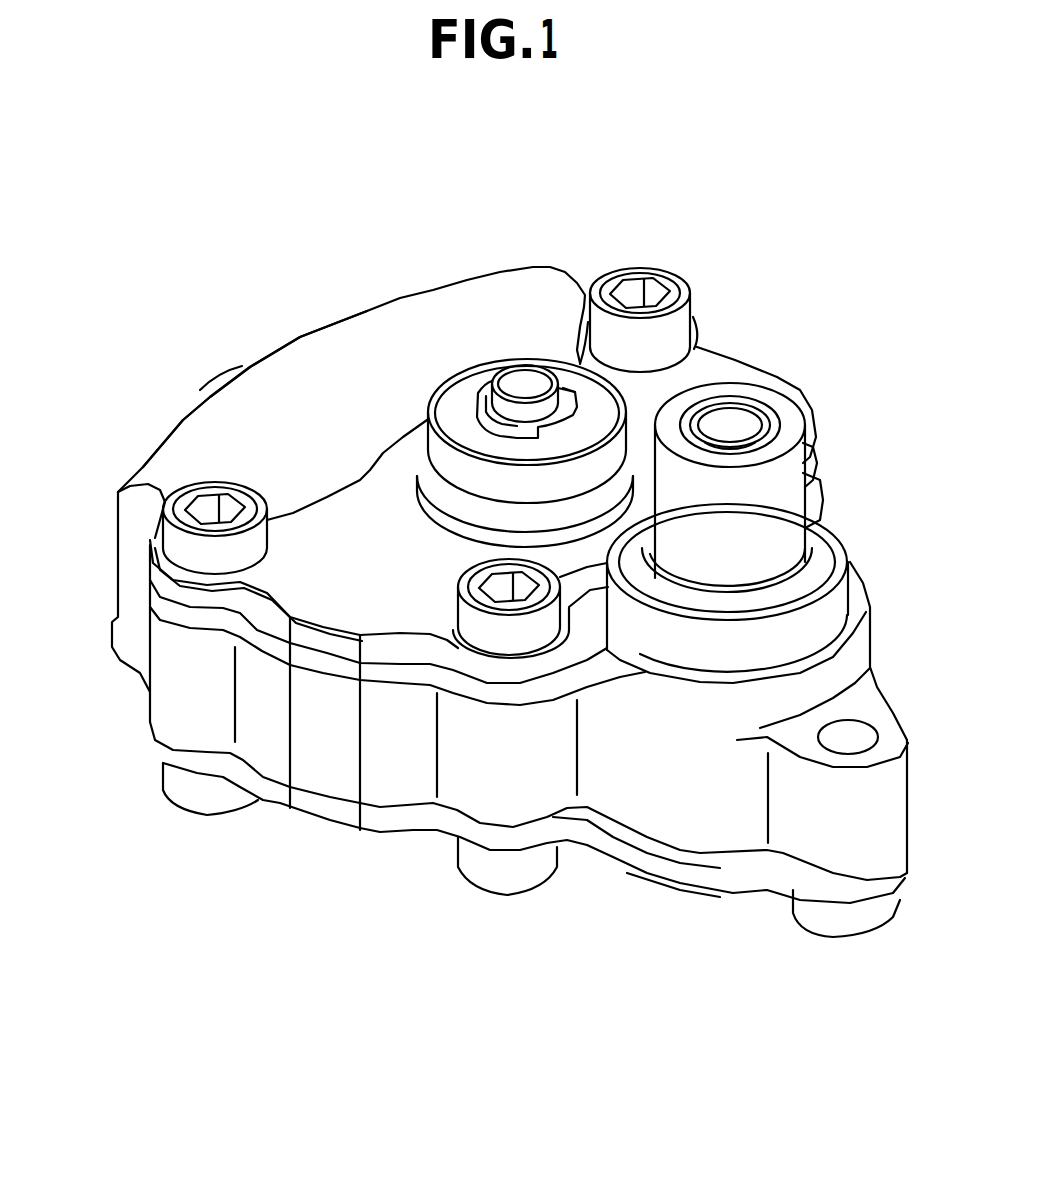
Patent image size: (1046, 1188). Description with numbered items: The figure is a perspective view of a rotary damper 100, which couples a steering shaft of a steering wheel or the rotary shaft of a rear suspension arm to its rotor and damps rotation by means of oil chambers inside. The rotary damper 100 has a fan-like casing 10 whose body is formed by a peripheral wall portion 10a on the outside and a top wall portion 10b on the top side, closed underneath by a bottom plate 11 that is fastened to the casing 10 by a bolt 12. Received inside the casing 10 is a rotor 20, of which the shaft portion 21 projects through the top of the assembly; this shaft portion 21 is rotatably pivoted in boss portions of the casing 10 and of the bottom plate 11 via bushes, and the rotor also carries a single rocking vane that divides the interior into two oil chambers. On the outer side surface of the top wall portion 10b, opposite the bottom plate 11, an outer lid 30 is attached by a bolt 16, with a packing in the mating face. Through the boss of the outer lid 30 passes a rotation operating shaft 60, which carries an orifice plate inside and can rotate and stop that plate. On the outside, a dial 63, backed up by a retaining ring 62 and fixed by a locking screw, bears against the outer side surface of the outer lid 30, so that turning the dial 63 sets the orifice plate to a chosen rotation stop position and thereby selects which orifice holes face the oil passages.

The rotary damper 100 is at (478, 609).
The casing 10 is at (290, 353).
The peripheral wall portion 10a is at (410, 787).
The top wall portion 10b is at (203, 420).
The bottom plate 11 is at (320, 800).
The bolt 12 is at (850, 925).
The bolt 16 is at (118, 490).
The rotor 20 is at (786, 404).
The shaft portion 21 is at (788, 485).
The outer lid 30 is at (338, 517).
The rotation operating shaft 60 is at (527, 375).
The retaining ring 62 is at (578, 403).
The dial 63 is at (440, 450).